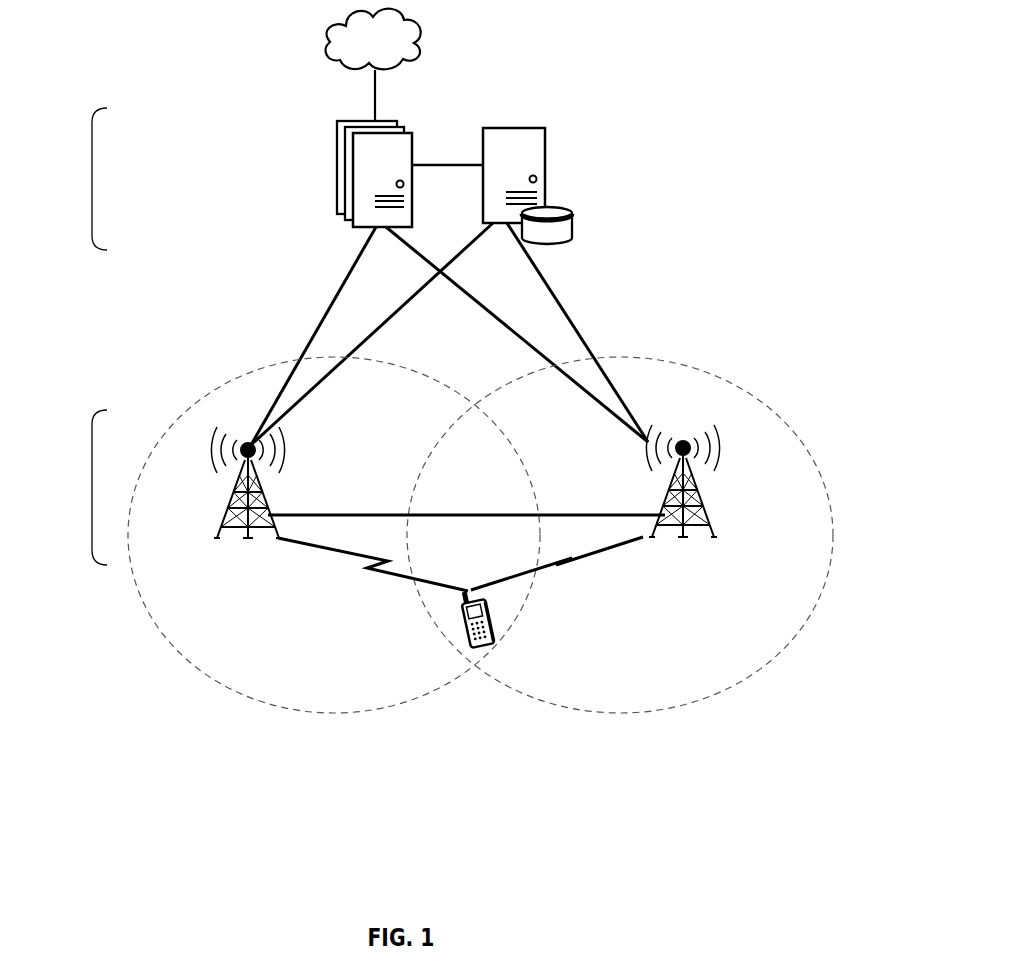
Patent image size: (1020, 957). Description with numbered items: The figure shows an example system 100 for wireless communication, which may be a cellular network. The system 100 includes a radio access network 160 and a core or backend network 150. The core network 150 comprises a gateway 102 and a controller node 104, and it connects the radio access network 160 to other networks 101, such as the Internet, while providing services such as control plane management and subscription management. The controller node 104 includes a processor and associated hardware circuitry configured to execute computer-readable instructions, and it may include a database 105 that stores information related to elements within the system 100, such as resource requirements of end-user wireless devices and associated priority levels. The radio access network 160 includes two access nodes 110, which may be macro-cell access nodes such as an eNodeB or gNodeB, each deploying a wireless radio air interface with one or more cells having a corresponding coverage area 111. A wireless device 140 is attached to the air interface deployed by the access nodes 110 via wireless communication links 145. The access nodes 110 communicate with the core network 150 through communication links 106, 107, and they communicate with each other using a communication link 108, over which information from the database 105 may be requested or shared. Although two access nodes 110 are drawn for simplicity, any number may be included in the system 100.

The system 100 is at (622, 48).
The other networks 101 is at (359, 48).
The gateway 102 is at (336, 140).
The controller node 104 is at (545, 148).
The database 105 is at (572, 218).
The communication link 106 is at (333, 297).
The communication link 107 is at (396, 316).
The communication link 108 is at (334, 514).
The access node 110 is at (220, 532).
The coverage area 111 is at (231, 688).
The wireless device 140 is at (462, 620).
The wireless communication link 145 is at (377, 573).
The core network 150 is at (92, 178).
The radio access network 160 is at (92, 487).